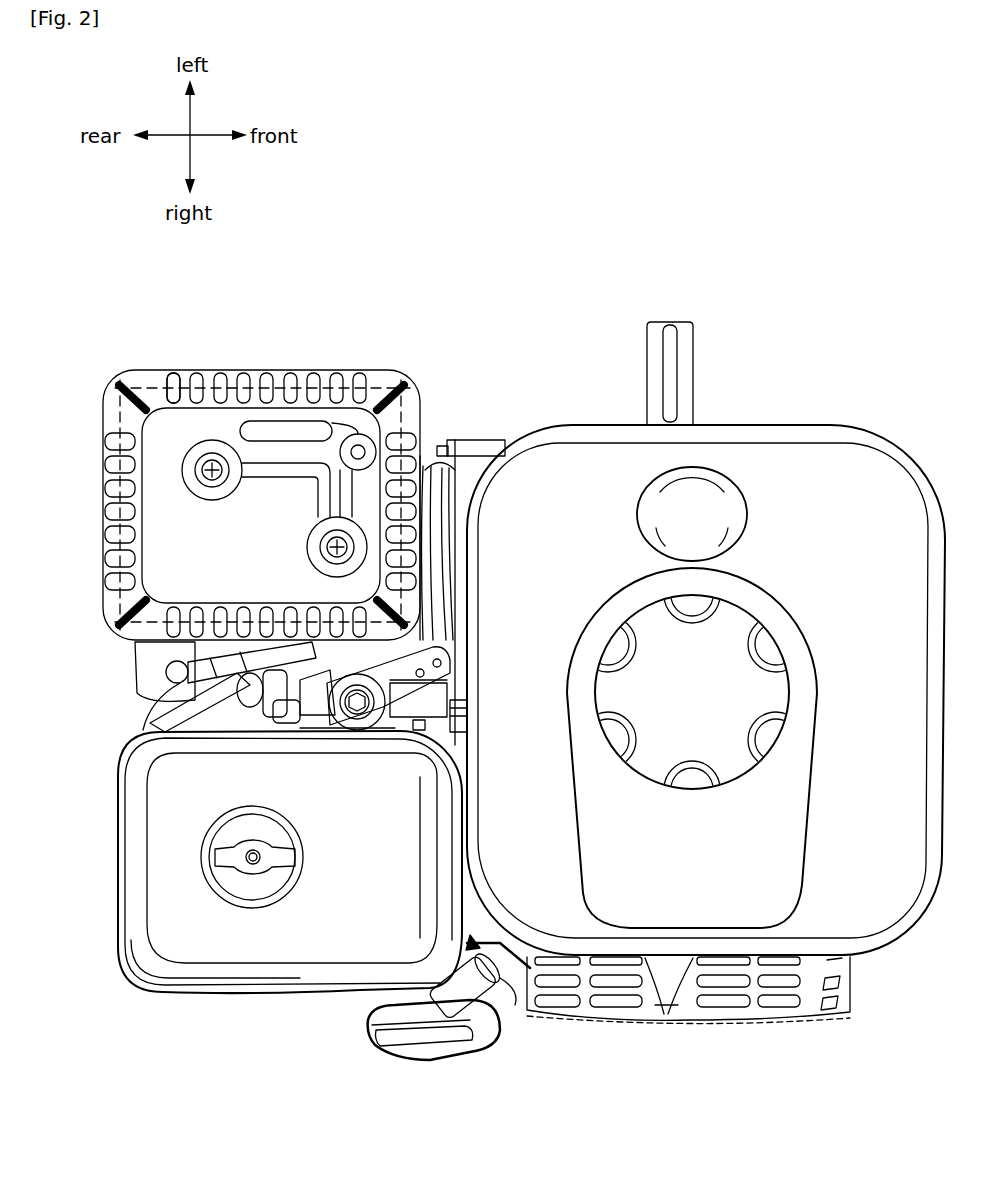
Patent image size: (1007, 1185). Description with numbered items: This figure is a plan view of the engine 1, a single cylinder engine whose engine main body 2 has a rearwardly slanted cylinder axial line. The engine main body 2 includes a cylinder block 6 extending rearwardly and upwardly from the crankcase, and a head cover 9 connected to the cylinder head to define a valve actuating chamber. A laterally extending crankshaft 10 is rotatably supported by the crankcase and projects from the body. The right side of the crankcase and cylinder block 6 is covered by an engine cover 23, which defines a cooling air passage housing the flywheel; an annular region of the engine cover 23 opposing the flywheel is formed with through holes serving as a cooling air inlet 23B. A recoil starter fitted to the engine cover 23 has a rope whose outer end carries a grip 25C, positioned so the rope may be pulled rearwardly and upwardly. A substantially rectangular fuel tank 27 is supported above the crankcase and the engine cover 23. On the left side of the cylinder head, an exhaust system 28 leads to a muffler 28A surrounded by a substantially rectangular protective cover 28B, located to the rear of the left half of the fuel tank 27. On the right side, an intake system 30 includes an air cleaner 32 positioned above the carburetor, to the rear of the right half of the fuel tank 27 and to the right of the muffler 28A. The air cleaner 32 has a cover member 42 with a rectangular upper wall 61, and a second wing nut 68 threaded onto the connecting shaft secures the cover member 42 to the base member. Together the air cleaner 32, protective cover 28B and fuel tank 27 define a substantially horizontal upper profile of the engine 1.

The engine 1 is at (850, 316).
The engine main body 2 is at (813, 1030).
The cylinder block 6 is at (448, 472).
The head cover 9 is at (142, 667).
The crankshaft 10 is at (690, 362).
The engine cover 23 is at (696, 1005).
The cooling air inlet 23B is at (645, 1022).
The grip 25C is at (428, 1052).
The fuel tank 27 is at (834, 455).
The exhaust system 28 is at (236, 461).
The muffler 28A is at (153, 385).
The protective cover 28B is at (138, 380).
The intake system 30 is at (261, 910).
The air cleaner 32 is at (243, 1008).
The cover member 42 is at (305, 948).
The upper wall 61 is at (160, 908).
The second wing nut 68 is at (217, 855).